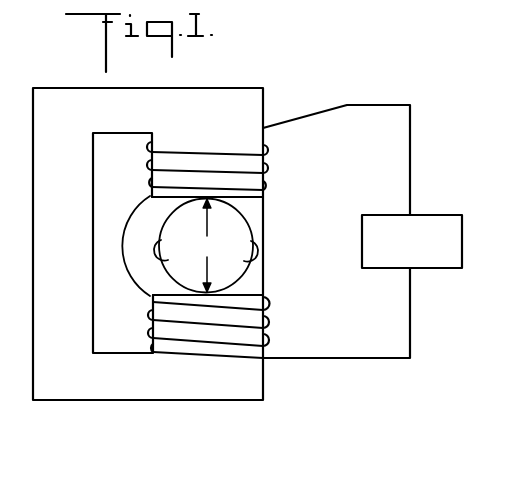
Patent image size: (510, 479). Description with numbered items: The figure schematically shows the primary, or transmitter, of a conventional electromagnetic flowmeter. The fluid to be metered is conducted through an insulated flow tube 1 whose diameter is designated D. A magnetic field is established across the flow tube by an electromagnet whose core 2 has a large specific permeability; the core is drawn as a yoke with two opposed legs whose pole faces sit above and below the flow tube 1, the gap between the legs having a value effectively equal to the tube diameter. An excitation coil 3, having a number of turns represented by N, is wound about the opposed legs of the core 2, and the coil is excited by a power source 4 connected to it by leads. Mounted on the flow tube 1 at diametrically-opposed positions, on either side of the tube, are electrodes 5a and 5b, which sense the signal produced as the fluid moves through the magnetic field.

The flow tube 1 is at (250, 225).
The core 2 is at (262, 98).
The excitation coil 3 is at (270, 172).
The power source 4 is at (452, 213).
The electrode 5a is at (163, 265).
The electrode 5b is at (253, 268).